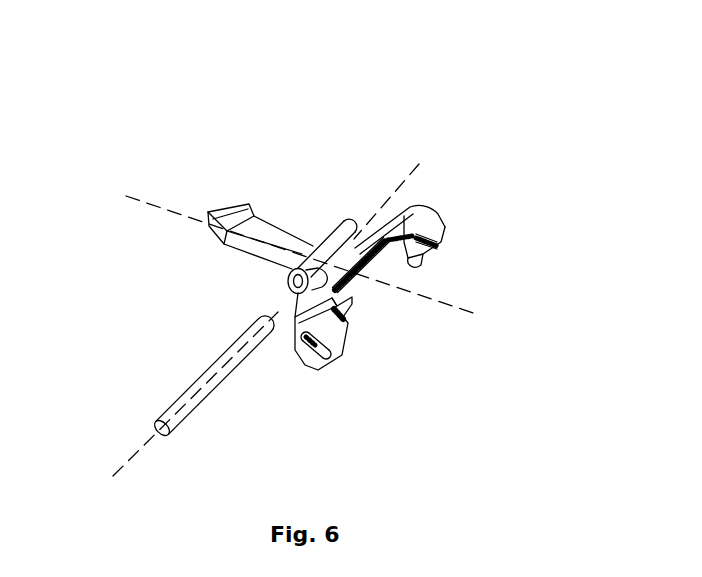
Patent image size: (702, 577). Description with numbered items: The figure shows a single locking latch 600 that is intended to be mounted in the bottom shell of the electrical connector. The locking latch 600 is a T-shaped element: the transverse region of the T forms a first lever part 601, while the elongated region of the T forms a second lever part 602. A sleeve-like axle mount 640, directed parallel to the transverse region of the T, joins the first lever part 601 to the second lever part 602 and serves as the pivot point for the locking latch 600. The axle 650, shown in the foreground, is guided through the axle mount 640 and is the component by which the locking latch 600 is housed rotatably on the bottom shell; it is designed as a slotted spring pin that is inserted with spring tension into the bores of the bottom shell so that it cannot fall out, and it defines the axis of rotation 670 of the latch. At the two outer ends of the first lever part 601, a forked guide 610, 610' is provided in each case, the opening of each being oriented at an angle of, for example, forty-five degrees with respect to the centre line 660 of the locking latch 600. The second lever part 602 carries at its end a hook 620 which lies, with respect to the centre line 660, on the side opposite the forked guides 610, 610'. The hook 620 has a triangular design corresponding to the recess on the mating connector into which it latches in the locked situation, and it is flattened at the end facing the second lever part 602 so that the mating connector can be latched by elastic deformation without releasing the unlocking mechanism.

The locking latch 600 is at (347, 150).
The first lever part 601 is at (353, 277).
The second lever part 602 is at (258, 250).
The forked guide 610 is at (323, 387).
The forked guide 610' is at (484, 241).
The hook 620 is at (230, 216).
The axle mount 640 is at (347, 217).
The axle 650 is at (192, 408).
The centre line 660 is at (150, 202).
The axis of rotation 670 is at (132, 458).